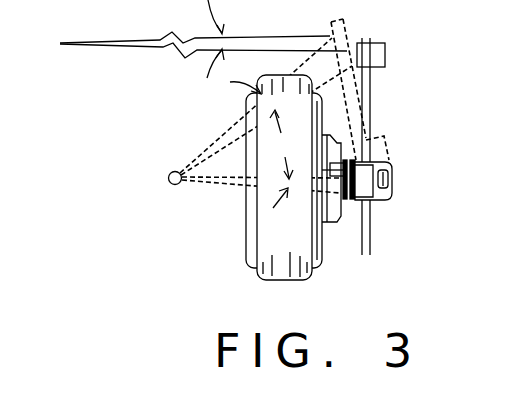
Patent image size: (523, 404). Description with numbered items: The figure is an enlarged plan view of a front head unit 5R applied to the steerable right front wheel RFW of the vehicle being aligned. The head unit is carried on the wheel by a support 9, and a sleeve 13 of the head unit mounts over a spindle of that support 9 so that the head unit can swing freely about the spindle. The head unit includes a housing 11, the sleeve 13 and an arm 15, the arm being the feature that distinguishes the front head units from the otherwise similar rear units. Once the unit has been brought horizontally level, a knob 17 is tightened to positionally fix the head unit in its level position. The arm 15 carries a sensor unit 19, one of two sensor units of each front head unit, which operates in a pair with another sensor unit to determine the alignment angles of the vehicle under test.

The sensor unit 19 is at (385, 52).
The arm 15 is at (370, 80).
The sleeve 13 is at (370, 163).
The knob 17 is at (393, 178).
The right front head unit 5R is at (403, 199).
The housing 11 is at (377, 201).
The support 9 is at (338, 232).
The right front wheel RFW is at (220, 208).